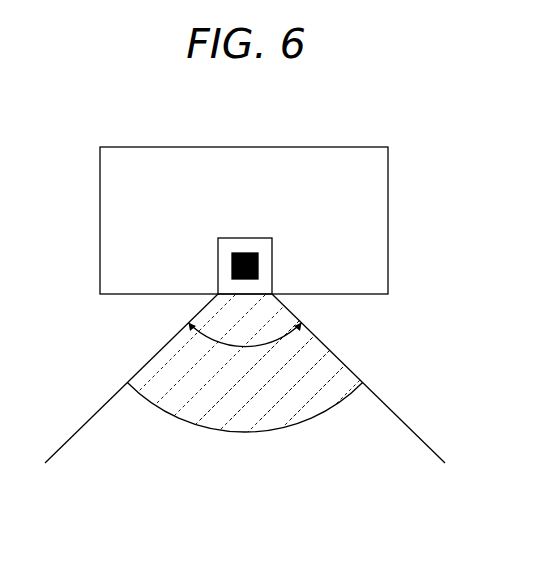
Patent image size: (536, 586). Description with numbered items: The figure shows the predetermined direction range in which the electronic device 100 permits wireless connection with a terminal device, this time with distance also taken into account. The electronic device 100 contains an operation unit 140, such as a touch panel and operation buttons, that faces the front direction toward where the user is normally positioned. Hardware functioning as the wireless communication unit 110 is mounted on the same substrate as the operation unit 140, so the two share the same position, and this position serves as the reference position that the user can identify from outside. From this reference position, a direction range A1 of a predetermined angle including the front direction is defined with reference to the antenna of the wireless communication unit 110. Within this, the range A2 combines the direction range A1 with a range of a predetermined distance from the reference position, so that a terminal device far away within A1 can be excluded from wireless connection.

The electronic device 100 is at (242, 147).
The operation unit 140 is at (243, 238).
The wireless communication unit 110 is at (229, 267).
The direction range of the predetermined angle A1 is at (327, 437).
The predetermined direction range with distance A2 is at (215, 402).